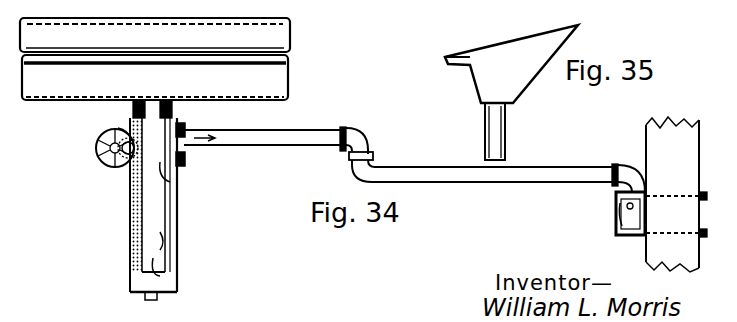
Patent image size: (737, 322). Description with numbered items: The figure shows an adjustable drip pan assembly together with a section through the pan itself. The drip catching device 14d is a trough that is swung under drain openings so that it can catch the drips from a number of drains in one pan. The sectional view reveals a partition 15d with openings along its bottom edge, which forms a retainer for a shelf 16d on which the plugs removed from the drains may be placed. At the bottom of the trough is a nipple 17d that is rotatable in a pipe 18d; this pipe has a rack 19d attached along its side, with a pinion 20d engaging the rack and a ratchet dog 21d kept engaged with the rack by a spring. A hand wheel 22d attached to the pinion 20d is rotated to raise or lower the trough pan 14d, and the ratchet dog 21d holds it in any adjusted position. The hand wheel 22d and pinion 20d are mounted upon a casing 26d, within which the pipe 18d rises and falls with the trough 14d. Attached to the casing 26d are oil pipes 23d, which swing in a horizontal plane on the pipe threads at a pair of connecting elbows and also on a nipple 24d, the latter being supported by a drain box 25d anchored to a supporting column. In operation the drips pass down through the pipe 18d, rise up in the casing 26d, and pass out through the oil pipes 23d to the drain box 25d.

In FIG. 34, the drip catching device 14d is at (474, 92).
In FIG. 35, the partition 15d is at (473, 60).
In FIG. 35, the shelf 16d is at (455, 60).
In FIG. 34, the nipple 17d is at (166, 182).
In FIG. 34, the pipe 18d is at (163, 235).
In FIG. 34, the rack 19d is at (128, 220).
In FIG. 34, the pinion 20d is at (116, 160).
In FIG. 34, the ratchet dog 21d is at (112, 132).
In FIG. 34, the hand wheel 22d is at (97, 148).
In FIG. 34, the oil pipes 23d is at (338, 124).
In FIG. 34, the nipple 24d is at (614, 205).
In FIG. 34, the drain box 25d is at (616, 226).
In FIG. 34, the casing 26d is at (186, 160).